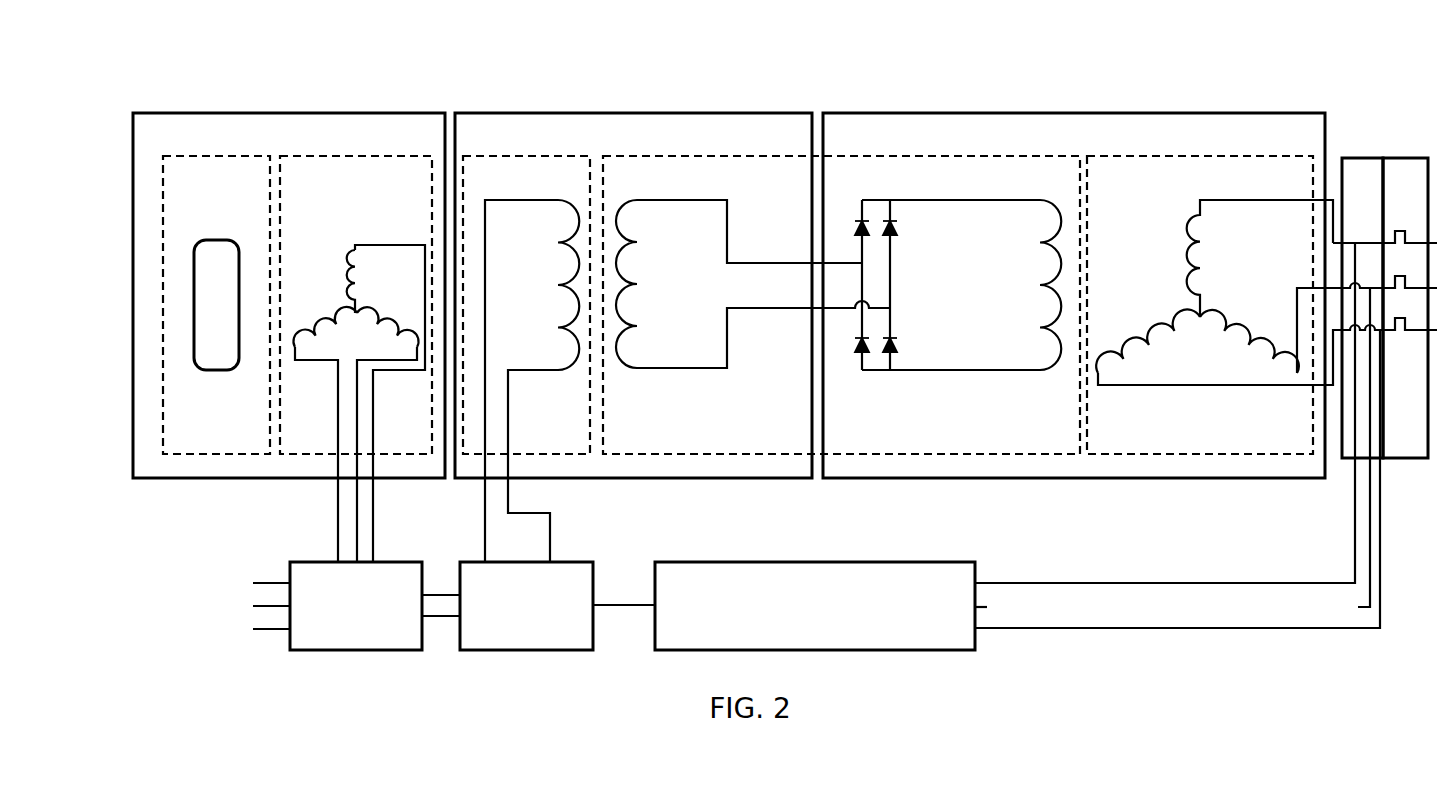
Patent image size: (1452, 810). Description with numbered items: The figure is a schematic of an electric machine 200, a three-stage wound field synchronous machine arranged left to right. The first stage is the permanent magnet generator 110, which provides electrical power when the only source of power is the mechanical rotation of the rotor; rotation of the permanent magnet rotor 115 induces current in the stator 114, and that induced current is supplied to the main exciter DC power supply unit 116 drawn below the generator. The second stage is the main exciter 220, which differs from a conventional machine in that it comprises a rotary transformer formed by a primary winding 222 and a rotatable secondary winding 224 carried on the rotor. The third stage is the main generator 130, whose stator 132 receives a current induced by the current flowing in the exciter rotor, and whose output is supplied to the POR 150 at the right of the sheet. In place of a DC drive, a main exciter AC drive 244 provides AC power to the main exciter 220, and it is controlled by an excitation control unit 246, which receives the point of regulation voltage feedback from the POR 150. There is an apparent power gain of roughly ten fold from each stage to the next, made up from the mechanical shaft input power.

The electric machine 200 is at (418, 76).
The permanent magnet generator 110 is at (196, 478).
The permanent magnet rotor 115 is at (162, 278).
The stator 114 is at (316, 456).
The main exciter DC power supply unit 116 is at (288, 645).
The main exciter 220 is at (577, 113).
The primary winding 222 is at (568, 457).
The secondary winding 224 is at (694, 395).
The main generator 130 is at (1148, 113).
The stator 132 is at (1188, 457).
The POR 150 is at (1362, 158).
The main exciter AC drive 244 is at (596, 633).
The excitation control unit 246 is at (976, 635).